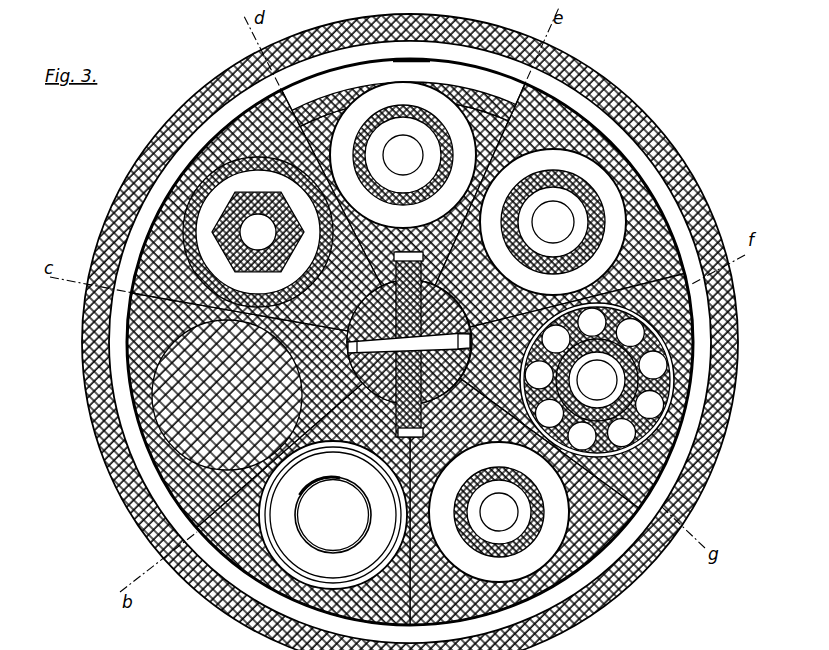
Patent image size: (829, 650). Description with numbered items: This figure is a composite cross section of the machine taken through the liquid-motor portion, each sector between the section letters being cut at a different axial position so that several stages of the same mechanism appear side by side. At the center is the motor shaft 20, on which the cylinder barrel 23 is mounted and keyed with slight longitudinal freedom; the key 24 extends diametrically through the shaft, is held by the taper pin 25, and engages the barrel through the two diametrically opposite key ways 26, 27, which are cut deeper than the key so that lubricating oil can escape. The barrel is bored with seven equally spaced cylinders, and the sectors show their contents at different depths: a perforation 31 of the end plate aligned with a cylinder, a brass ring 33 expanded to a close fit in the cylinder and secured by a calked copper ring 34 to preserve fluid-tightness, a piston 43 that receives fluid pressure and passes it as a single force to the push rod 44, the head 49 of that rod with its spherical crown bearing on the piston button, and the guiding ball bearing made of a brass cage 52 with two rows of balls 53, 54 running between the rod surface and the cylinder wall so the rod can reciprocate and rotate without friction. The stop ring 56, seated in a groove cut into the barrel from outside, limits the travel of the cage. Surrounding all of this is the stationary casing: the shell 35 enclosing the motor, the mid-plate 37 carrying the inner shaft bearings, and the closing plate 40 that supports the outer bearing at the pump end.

The motor shaft 20 is at (284, 288).
The cylinder barrel 23 is at (690, 315).
The key 24 is at (409, 343).
The taper pin 25 is at (451, 341).
The key way 26 is at (409, 252).
The key way 27 is at (387, 460).
The perforation 31 is at (305, 541).
The brass ring 33 is at (262, 513).
The copper ring 34 is at (300, 455).
The shell 35 is at (650, 130).
The mid-plate 37 is at (333, 515).
The closing plate 40 is at (533, 238).
The piston 43 is at (180, 423).
The push rod 44 is at (373, 178).
The head 49 is at (382, 172).
The brass cage 52 is at (501, 362).
The balls 53 is at (596, 379).
The balls 54 is at (476, 190).
The stop ring 56 is at (446, 100).